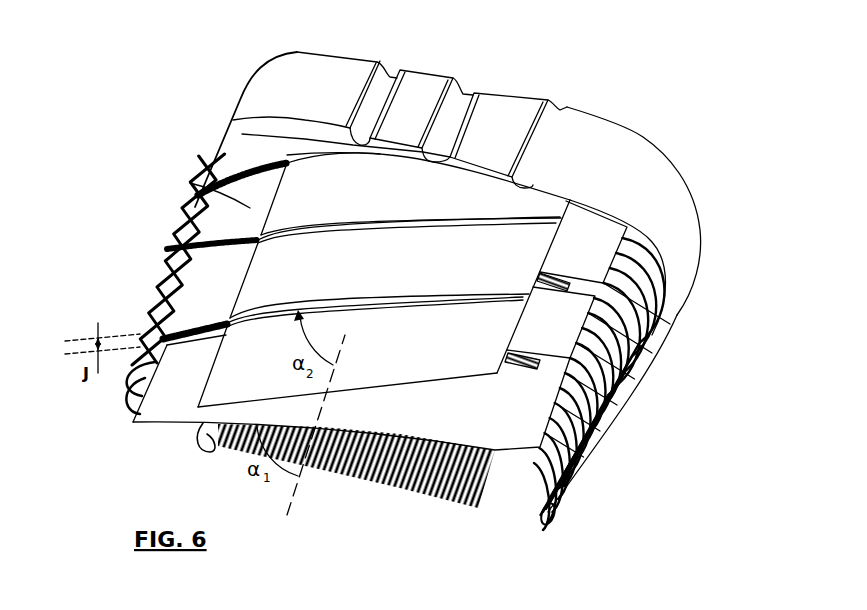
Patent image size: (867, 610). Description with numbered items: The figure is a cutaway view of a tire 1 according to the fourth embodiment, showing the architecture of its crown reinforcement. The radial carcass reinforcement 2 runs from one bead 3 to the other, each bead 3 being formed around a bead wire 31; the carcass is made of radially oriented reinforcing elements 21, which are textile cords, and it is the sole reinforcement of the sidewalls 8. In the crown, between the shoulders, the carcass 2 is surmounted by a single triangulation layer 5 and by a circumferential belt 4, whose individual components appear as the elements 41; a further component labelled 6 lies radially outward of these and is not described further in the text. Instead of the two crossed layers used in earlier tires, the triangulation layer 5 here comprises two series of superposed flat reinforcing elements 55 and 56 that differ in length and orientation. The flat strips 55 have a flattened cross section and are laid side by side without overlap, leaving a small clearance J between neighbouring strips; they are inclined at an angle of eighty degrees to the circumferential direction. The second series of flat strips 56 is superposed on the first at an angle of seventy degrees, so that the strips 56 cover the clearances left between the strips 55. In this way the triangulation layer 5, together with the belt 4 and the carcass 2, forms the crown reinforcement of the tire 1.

The housing 1 is at (678, 105).
The carcass reinforcement 2 is at (140, 284).
The bead 3 is at (598, 520).
The belt 4 is at (351, 449).
The triangulation layer 5 is at (315, 242).
The fixing block 6 is at (512, 122).
The sidewall 8 is at (692, 260).
The reinforcing elements 21 is at (163, 273).
The bead wire 31 is at (540, 520).
The tooth 41 is at (409, 540).
The flat reinforcing elements 55 is at (233, 120).
The flat reinforcing elements 56 is at (412, 280).